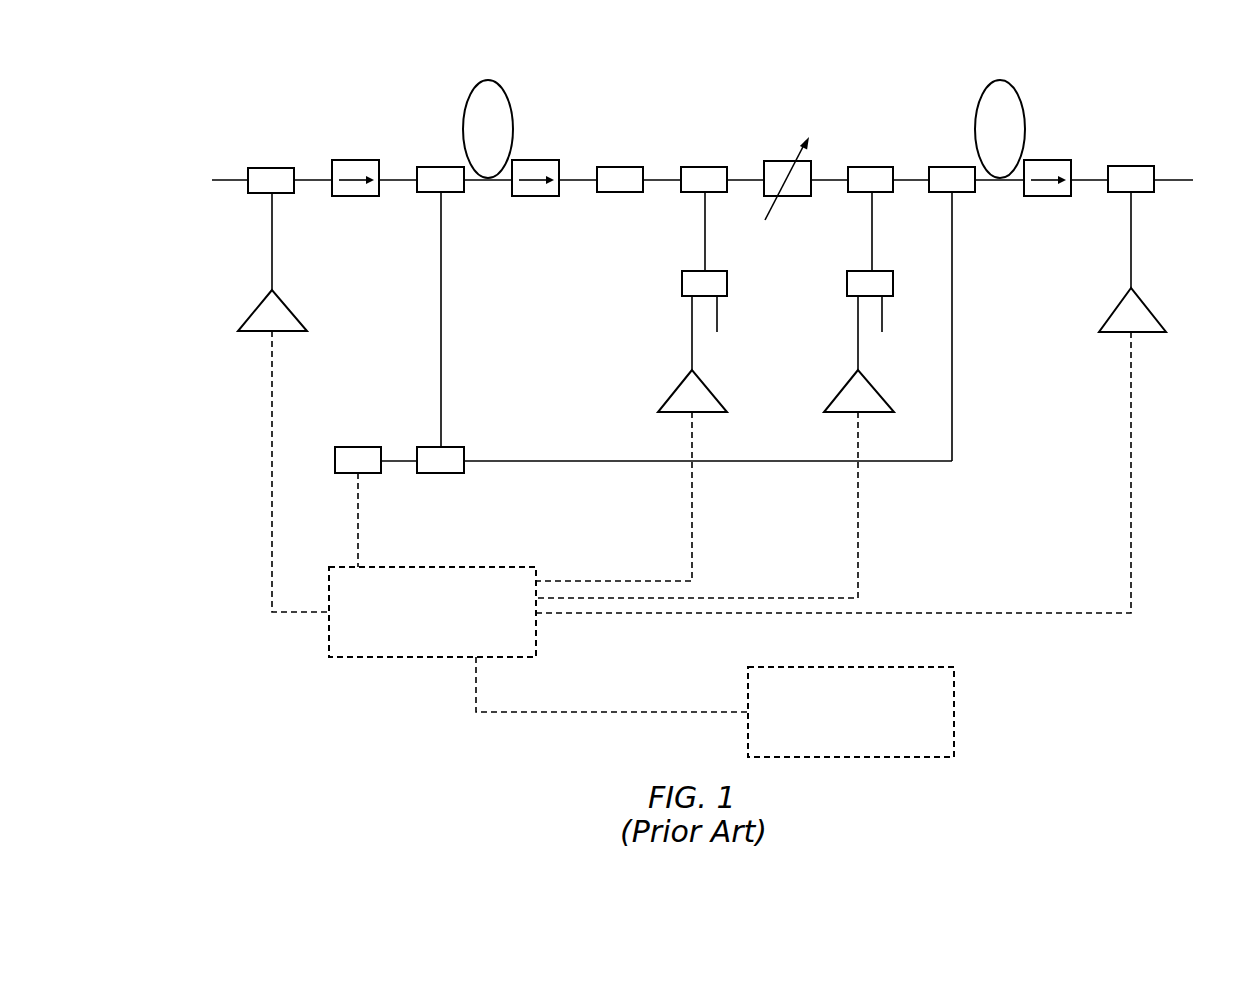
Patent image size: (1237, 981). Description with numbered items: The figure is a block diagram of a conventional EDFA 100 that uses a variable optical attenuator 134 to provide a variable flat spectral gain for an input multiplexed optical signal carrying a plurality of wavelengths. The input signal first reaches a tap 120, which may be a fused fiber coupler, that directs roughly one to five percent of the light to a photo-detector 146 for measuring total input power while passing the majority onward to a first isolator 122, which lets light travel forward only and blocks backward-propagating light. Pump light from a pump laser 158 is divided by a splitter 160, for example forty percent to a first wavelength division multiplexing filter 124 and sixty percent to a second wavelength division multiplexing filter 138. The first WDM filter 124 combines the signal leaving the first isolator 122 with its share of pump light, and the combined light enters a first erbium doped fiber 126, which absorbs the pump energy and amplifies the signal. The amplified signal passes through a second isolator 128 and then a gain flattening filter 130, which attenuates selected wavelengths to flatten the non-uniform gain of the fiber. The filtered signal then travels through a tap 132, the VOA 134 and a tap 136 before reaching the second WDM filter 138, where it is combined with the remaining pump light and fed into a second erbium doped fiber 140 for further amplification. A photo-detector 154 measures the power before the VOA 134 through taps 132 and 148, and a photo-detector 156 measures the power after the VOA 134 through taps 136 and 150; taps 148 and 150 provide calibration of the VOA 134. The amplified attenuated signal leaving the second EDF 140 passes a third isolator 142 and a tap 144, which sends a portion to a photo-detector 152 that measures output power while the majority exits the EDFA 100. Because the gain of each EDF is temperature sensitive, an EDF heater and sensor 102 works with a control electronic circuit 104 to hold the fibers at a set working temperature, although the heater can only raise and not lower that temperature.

The EDFA 100 is at (209, 76).
The EDF heater and sensor 102 is at (800, 667).
The control electronic circuit 104 is at (440, 567).
The tap 120 is at (258, 168).
The first isolator 122 is at (379, 162).
The first wavelength division multiplexing filter 124 is at (417, 193).
The first erbium doped fiber 126 is at (510, 92).
The second isolator 128 is at (559, 162).
The gain flattening filter 130 is at (643, 167).
The tap 132 is at (727, 167).
The variable optical attenuator 134 is at (811, 162).
The tap 136 is at (893, 167).
The second wavelength division multiplexing filter 138 is at (929, 192).
The second erbium doped fiber 140 is at (1022, 102).
The third isolator 142 is at (1071, 162).
The tap 144 is at (1108, 193).
The photo-detector 146 is at (255, 311).
The tap 148 is at (727, 287).
The tap 150 is at (893, 292).
The photo-detector 152 is at (1160, 318).
The photo-detector 154 is at (722, 403).
The photo-detector 156 is at (885, 398).
The pump laser 158 is at (381, 448).
The splitter 160 is at (464, 449).